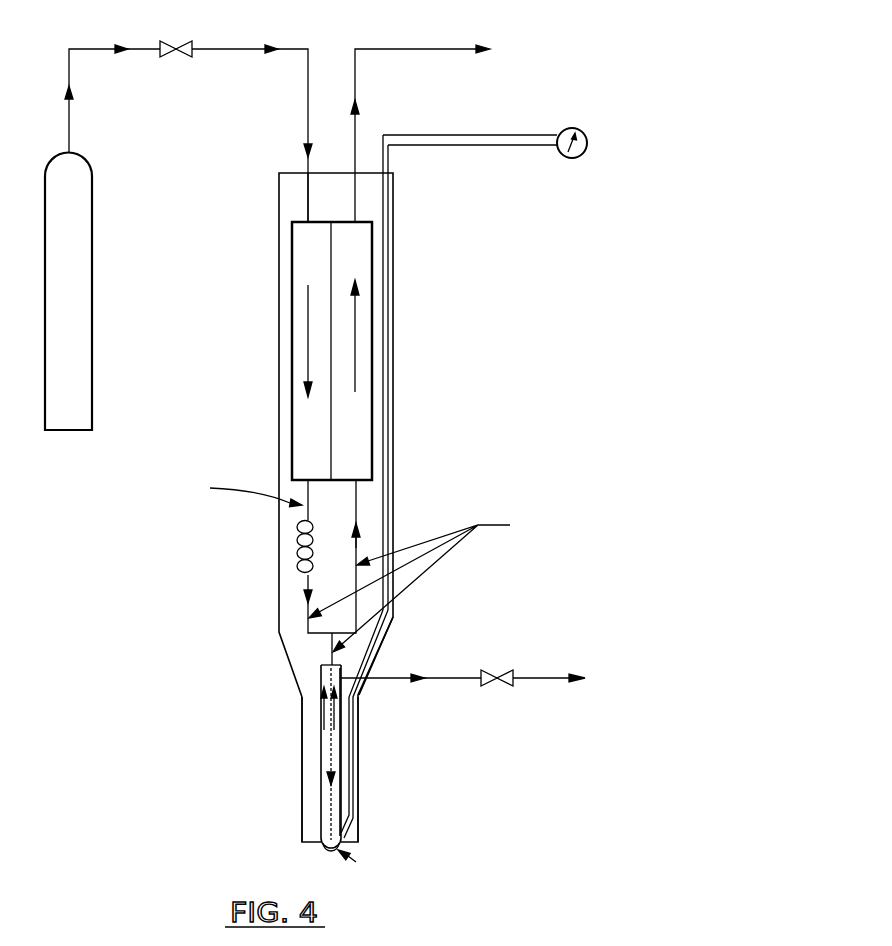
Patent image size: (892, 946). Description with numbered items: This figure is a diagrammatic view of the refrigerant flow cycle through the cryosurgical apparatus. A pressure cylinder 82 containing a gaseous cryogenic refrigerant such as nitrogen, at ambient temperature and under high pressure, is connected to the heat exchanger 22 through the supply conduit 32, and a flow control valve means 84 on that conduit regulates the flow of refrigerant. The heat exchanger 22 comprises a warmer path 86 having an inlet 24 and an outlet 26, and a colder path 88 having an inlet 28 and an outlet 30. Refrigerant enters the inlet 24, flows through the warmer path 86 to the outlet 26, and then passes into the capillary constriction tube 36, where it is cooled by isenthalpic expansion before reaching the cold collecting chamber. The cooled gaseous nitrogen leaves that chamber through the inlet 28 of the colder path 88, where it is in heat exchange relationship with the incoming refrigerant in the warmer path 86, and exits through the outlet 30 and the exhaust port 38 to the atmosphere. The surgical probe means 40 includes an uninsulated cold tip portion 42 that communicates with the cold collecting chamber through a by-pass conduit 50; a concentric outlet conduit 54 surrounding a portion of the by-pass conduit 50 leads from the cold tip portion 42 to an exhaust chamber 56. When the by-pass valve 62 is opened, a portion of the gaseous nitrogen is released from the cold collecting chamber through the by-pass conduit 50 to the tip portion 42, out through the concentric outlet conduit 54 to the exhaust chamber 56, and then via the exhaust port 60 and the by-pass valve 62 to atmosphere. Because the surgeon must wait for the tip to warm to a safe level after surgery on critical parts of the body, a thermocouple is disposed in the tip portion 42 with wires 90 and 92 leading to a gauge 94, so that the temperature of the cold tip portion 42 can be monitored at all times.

The heat exchanger 22 is at (281, 271).
The inlet 24 is at (310, 218).
The outlet 26 is at (308, 514).
The inlet 28 is at (357, 548).
The outlet 30 is at (357, 206).
The supply conduit 32 is at (306, 98).
The capillary constriction tube 36 is at (297, 545).
The exhaust port 38 is at (355, 173).
The surgical probe means 40 is at (369, 783).
The cold tip portion 42 is at (326, 847).
The by-pass conduit 50 is at (331, 645).
The concentric outlet conduit 54 is at (322, 733).
The exhaust chamber 56 is at (328, 670).
The exhaust port 60 is at (383, 677).
The by-pass valve 62 is at (490, 677).
The pressure cylinder 82 is at (92, 258).
The flow control valve means 84 is at (176, 48).
The warmer path 86 is at (300, 331).
The colder path 88 is at (362, 337).
The wire 90 is at (349, 713).
The wire 92 is at (359, 695).
The gauge 94 is at (583, 132).